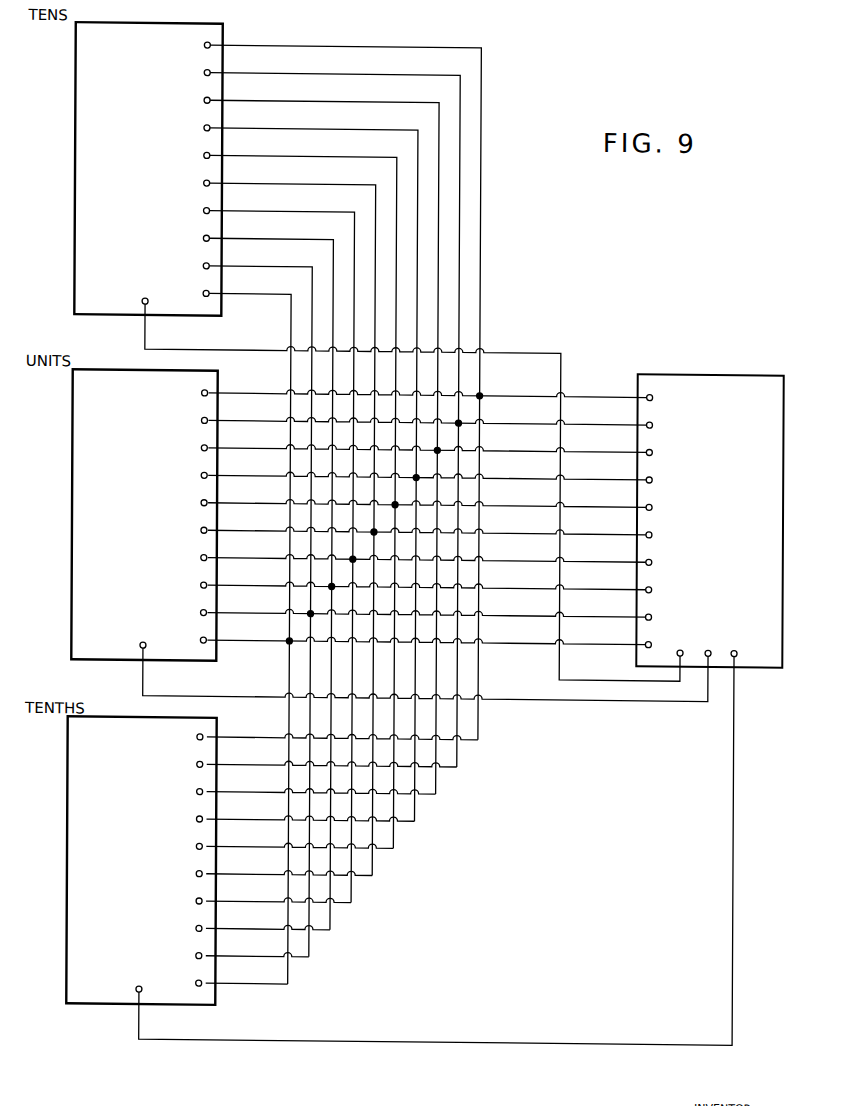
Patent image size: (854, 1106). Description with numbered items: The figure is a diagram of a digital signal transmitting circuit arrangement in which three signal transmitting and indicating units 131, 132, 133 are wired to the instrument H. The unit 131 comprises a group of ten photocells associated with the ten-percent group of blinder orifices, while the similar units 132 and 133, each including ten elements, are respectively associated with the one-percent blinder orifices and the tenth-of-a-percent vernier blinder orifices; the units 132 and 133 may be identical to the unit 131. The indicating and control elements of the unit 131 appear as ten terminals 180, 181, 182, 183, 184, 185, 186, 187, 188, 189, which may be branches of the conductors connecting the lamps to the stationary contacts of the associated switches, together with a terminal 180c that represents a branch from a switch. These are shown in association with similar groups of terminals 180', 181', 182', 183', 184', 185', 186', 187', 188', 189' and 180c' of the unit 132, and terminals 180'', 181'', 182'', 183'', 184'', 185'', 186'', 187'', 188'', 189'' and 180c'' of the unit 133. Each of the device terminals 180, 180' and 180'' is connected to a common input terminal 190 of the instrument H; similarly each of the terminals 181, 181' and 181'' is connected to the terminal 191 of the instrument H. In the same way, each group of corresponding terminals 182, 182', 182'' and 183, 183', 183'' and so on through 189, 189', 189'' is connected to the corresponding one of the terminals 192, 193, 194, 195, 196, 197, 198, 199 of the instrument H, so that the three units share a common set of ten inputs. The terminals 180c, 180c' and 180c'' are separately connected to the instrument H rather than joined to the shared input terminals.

The signal transmitting and indicating unit 131 is at (140, 166).
The signal transmitting and indicating unit 132 is at (125, 509).
The signal transmitting and indicating unit 133 is at (126, 862).
The instrument H is at (714, 522).
The terminal 180 is at (188, 38).
The terminal 181 is at (188, 65).
The terminal 182 is at (188, 93).
The terminal 183 is at (187, 120).
The terminal 184 is at (187, 148).
The terminal 185 is at (187, 176).
The terminal 186 is at (187, 203).
The terminal 187 is at (187, 231).
The terminal 188 is at (187, 258).
The terminal 189 is at (187, 286).
The terminal 180' is at (180, 385).
The terminal 181' is at (180, 413).
The terminal 182' is at (180, 440).
The terminal 183' is at (180, 468).
The terminal 184' is at (180, 495).
The terminal 185' is at (179, 523).
The terminal 186' is at (179, 550).
The terminal 187' is at (179, 578).
The terminal 188' is at (179, 605).
The terminal 189' is at (179, 632).
The terminal 180'' is at (172, 729).
The terminal 181'' is at (172, 757).
The terminal 182'' is at (172, 784).
The terminal 183'' is at (172, 811).
The terminal 184'' is at (172, 839).
The terminal 185'' is at (172, 866).
The terminal 186'' is at (172, 893).
The terminal 187'' is at (171, 921).
The terminal 188'' is at (171, 948).
The terminal 189'' is at (171, 975).
The common input terminal 190 is at (291, 47).
The terminal 191 is at (291, 75).
The terminal 192 is at (291, 102).
The terminal 193 is at (291, 130).
The terminal 194 is at (291, 158).
The terminal 195 is at (291, 185).
The terminal 196 is at (291, 213).
The terminal 197 is at (291, 240).
The terminal 198 is at (291, 268).
The terminal 199 is at (291, 296).
The terminal 180c is at (387, 477).
The terminal 180c' is at (396, 658).
The terminal 180c'' is at (406, 848).